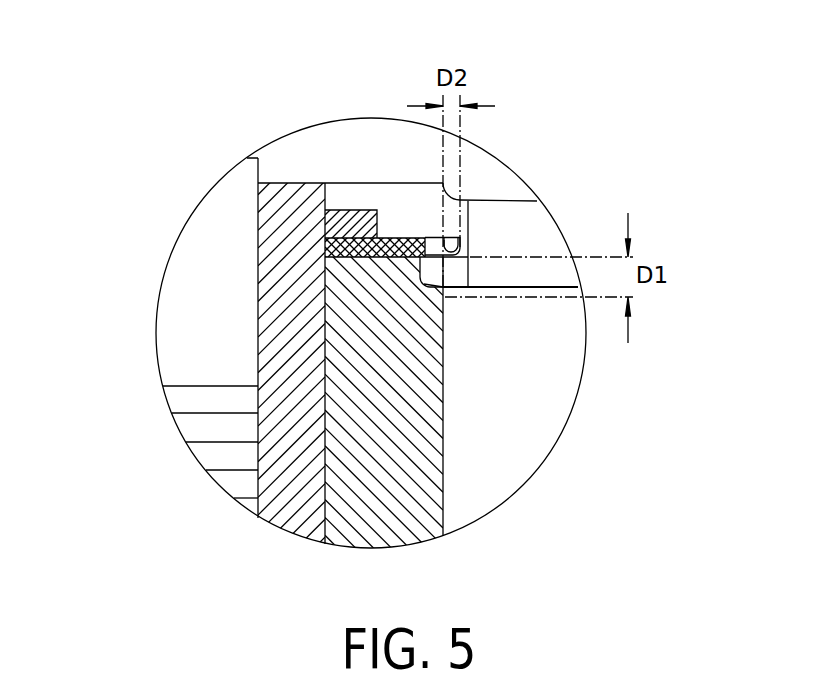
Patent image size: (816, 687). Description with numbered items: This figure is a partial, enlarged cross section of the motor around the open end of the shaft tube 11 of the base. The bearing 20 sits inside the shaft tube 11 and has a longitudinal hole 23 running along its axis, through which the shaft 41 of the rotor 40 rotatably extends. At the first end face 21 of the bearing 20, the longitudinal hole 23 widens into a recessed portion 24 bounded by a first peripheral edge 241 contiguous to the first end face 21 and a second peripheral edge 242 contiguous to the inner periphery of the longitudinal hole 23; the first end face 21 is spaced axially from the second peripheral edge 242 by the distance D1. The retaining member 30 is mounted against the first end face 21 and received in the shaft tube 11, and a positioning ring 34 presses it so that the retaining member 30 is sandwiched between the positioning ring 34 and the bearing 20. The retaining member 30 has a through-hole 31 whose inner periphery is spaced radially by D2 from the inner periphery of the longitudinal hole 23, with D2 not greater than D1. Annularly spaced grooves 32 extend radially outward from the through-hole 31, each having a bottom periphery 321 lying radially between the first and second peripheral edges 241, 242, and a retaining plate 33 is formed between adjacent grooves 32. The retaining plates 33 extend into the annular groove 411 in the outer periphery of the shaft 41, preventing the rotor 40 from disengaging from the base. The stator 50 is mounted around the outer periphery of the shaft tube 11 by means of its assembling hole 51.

The shaft tube 11 is at (295, 192).
The retaining member 30 is at (310, 183).
The first end face 21 is at (370, 237).
The positioning ring 34 is at (368, 210).
The first peripheral edge 241 is at (415, 257).
The bottom periphery 321 is at (438, 237).
The groove 32 is at (461, 238).
The retaining plate 33 is at (464, 250).
The rotor 40 is at (505, 190).
The through-hole 31 is at (470, 241).
The annular groove 411 is at (468, 270).
The recessed portion 24 is at (427, 280).
The second peripheral edge 242 is at (443, 289).
The shaft 41 is at (518, 450).
The longitudinal hole 23 is at (442, 495).
The bearing 20 is at (392, 508).
The stator 50 is at (187, 392).
The assembling hole 51 is at (258, 327).